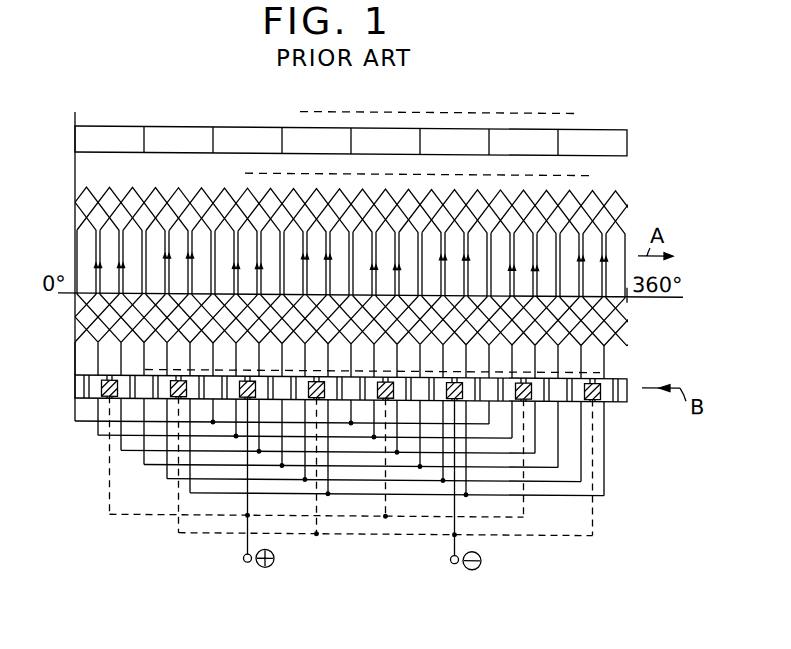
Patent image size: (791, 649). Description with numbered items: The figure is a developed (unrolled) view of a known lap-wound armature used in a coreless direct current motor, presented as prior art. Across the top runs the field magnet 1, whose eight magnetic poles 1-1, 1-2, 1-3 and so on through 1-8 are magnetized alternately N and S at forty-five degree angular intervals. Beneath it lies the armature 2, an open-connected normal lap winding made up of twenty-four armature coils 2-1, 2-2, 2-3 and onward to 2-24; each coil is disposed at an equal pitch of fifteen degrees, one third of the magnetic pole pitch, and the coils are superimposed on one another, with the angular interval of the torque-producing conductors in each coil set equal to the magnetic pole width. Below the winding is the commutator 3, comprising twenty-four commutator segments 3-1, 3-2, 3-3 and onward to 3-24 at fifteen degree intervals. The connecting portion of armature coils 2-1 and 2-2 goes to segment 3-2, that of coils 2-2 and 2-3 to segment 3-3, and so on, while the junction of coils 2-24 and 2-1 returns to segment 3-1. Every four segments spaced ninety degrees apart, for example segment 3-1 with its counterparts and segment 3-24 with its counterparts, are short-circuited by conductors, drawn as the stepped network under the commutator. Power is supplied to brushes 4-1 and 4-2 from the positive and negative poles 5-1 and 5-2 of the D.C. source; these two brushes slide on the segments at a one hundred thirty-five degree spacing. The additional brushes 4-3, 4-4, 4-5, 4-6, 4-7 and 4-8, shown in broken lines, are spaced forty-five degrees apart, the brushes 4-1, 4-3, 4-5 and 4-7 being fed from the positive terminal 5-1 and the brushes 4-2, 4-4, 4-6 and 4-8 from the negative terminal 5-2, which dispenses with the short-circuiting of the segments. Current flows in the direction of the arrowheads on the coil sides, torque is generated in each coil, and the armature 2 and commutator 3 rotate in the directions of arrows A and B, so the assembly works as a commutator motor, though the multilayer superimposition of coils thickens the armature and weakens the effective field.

The field magnet 1 is at (630, 136).
The magnetic pole 1-1 is at (95, 133).
The magnetic pole 1-2 is at (165, 132).
The magnetic pole 1-3 is at (237, 132).
The magnetic pole 1-8 is at (577, 134).
The armature 2 is at (703, 179).
The armature coil 2-1 is at (91, 189).
The armature coil 2-2 is at (114, 188).
The armature coil 2-3 is at (141, 188).
The armature coil 2-24 is at (617, 189).
The commutator 3 is at (629, 396).
The commutator segment 3-1 is at (74, 390).
The commutator segment 3-2 is at (85, 374).
The commutator segment 3-3 is at (118, 378).
The commutator segment 3-24 is at (608, 380).
The brush 4-1 is at (240, 380).
The brush 4-2 is at (450, 380).
The brush 4-3 is at (380, 380).
The brush 4-4 is at (600, 396).
The brush 4-5 is at (518, 380).
The brush 4-6 is at (170, 380).
The brush 4-7 is at (98, 398).
The brush 4-8 is at (312, 380).
The D.C. power source positive terminal 5-1 is at (244, 562).
The D.C. power source negative terminal 5-2 is at (451, 562).